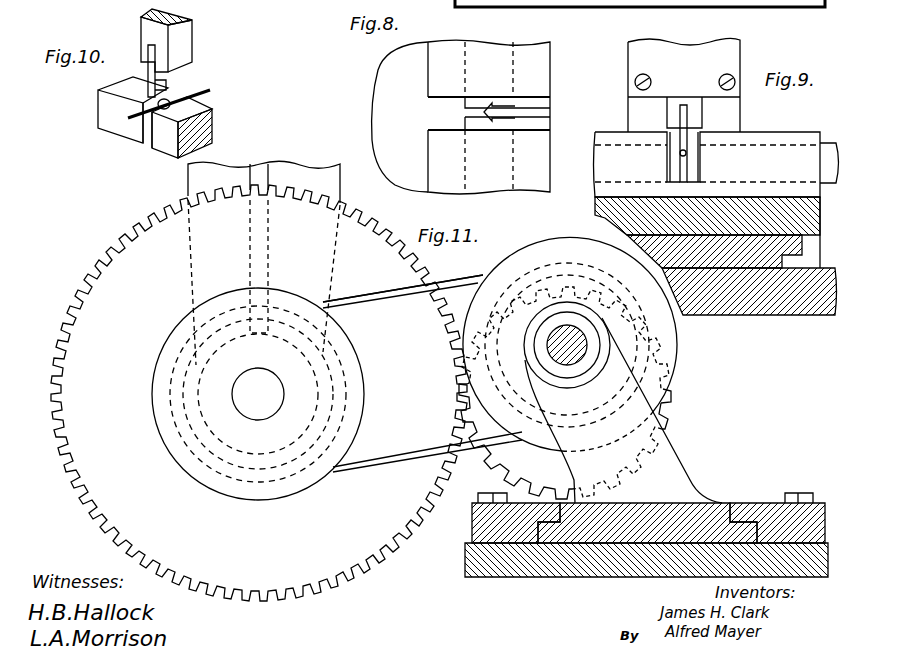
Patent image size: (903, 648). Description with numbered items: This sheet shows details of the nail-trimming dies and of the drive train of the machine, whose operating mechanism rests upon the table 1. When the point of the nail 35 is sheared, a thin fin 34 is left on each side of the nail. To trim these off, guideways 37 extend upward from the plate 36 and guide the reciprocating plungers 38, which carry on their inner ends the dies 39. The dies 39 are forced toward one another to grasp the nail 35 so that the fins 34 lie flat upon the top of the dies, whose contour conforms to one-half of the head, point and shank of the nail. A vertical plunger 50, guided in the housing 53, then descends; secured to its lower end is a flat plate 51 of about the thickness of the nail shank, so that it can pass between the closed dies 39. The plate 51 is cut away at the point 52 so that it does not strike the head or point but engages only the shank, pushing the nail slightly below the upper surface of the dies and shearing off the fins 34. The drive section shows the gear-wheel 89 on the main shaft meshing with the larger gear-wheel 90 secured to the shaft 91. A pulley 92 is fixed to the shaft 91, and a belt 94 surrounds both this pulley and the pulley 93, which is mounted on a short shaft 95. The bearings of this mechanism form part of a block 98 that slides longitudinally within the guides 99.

In FIG. 9, the table 1 is at (780, 313).
In FIG. 10, the fin 34 is at (177, 110).
In FIG. 10, the nail 35 is at (130, 120).
In FIG. 8, the plate 36 is at (461, 117).
In FIG. 9, the plate 36 is at (802, 215).
In FIG. 8, the guideways 37 is at (489, 117).
In FIG. 9, the guideways 37 is at (707, 164).
In FIG. 9, the reciprocating plungers 38 is at (831, 152).
In FIG. 10, the reciprocating plungers 38 is at (197, 110).
In FIG. 8, the dies 39 is at (512, 105).
In FIG. 9, the dies 39 is at (686, 166).
In FIG. 10, the dies 39 is at (140, 137).
In FIG. 10, the plunger 50 is at (187, 42).
In FIG. 9, the flat plate 51 is at (688, 122).
In FIG. 10, the flat plate 51 is at (187, 82).
In FIG. 10, the cut-away point 52 is at (177, 78).
In FIG. 9, the housing 53 is at (684, 85).
In FIG. 11, the gear-wheel 89 is at (565, 393).
In FIG. 11, the gear-wheel 90 is at (422, 373).
In FIG. 11, the shaft 91 is at (278, 392).
In FIG. 11, the pulley 92 is at (355, 392).
In FIG. 11, the pulley 93 is at (557, 255).
In FIG. 11, the belt 94 is at (372, 292).
In FIG. 11, the short shaft 95 is at (573, 362).
In FIG. 11, the block 98 is at (637, 535).
In FIG. 11, the guides 99 is at (512, 537).